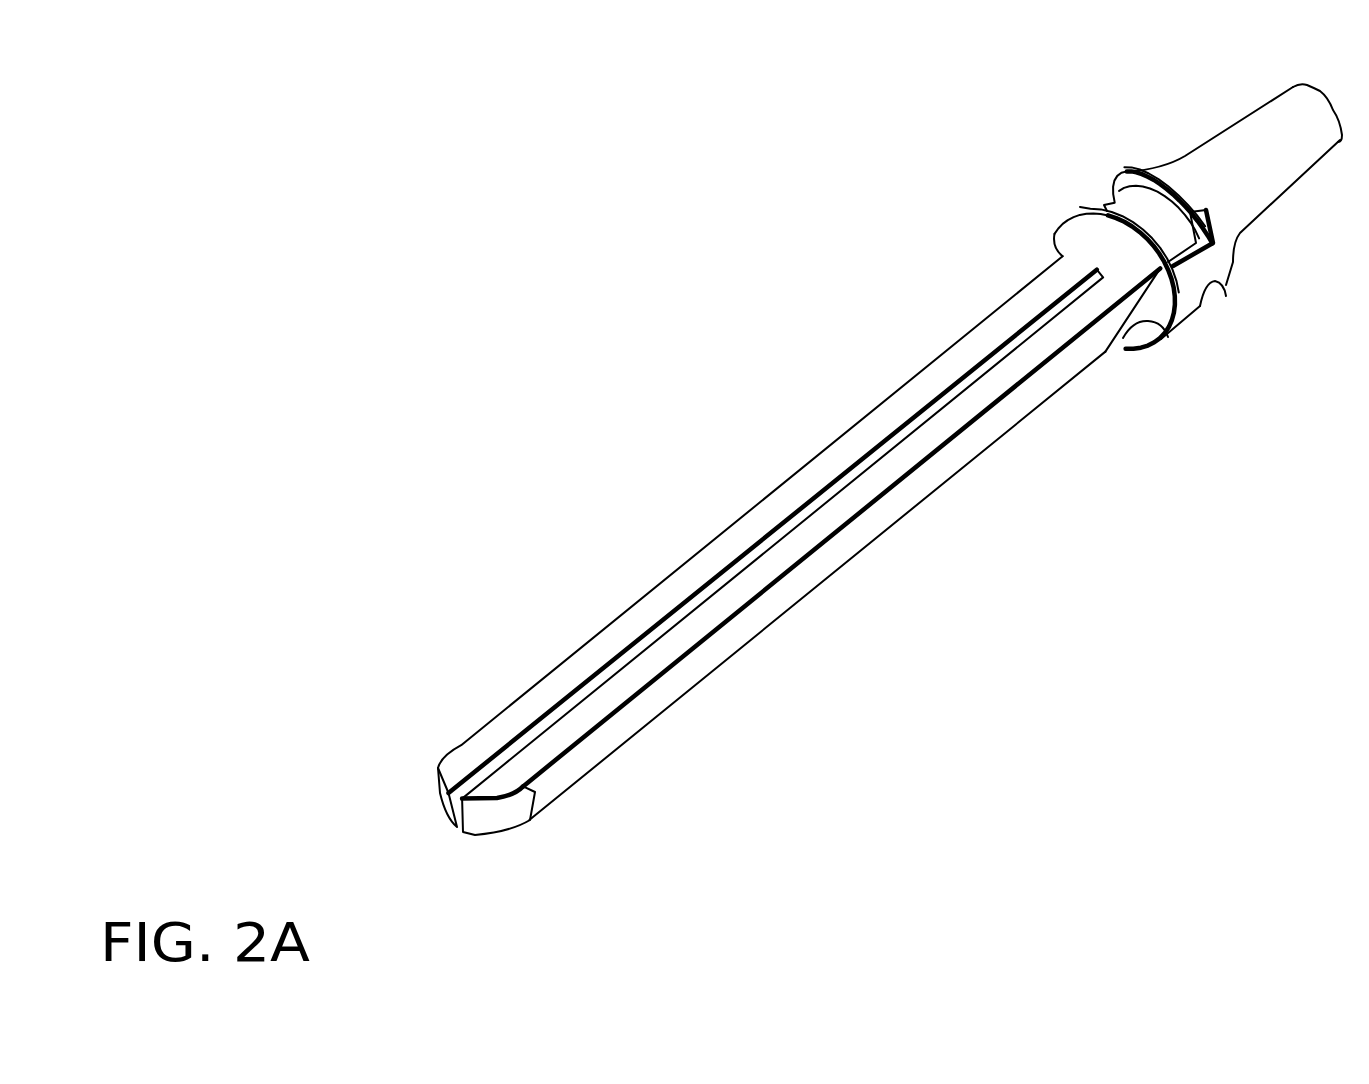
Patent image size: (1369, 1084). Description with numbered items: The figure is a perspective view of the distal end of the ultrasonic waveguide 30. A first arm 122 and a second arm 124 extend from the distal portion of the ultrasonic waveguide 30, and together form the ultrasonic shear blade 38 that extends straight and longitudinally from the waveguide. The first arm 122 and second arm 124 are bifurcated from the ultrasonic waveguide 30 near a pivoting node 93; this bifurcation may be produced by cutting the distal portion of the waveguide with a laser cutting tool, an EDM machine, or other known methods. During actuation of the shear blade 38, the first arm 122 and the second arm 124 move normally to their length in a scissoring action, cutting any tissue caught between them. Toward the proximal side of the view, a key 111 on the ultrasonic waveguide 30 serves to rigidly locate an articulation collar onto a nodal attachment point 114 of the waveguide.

The ultrasonic waveguide 30 is at (1282, 175).
The shear blade 38 is at (950, 603).
The pivoting node 93 is at (1064, 173).
The key 111 is at (1207, 272).
The nodal attachment point 114 is at (1137, 207).
The first arm 122 is at (895, 412).
The second arm 124 is at (1000, 382).